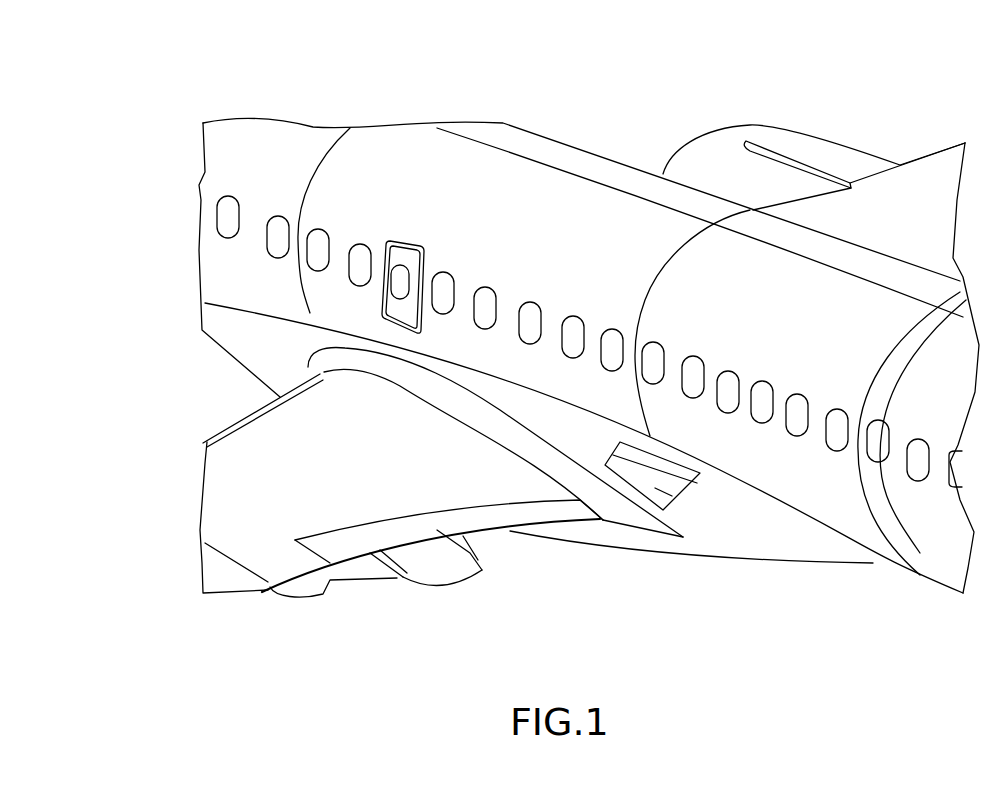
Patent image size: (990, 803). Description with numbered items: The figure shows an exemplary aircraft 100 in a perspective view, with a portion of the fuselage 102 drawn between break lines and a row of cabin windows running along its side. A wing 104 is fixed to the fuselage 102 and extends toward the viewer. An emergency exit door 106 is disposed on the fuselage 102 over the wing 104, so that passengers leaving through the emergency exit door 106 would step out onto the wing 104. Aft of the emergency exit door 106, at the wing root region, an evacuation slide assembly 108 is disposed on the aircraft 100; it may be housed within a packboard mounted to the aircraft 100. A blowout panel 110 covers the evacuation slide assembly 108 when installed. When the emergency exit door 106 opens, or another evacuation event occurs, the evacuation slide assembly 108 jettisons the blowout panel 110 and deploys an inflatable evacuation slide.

The aircraft 100 is at (150, 110).
The fuselage 102 is at (225, 277).
The wing 104 is at (390, 458).
The emergency exit door 106 is at (393, 240).
The evacuation slide assembly 108 is at (683, 492).
The blowout panel 110 is at (668, 490).